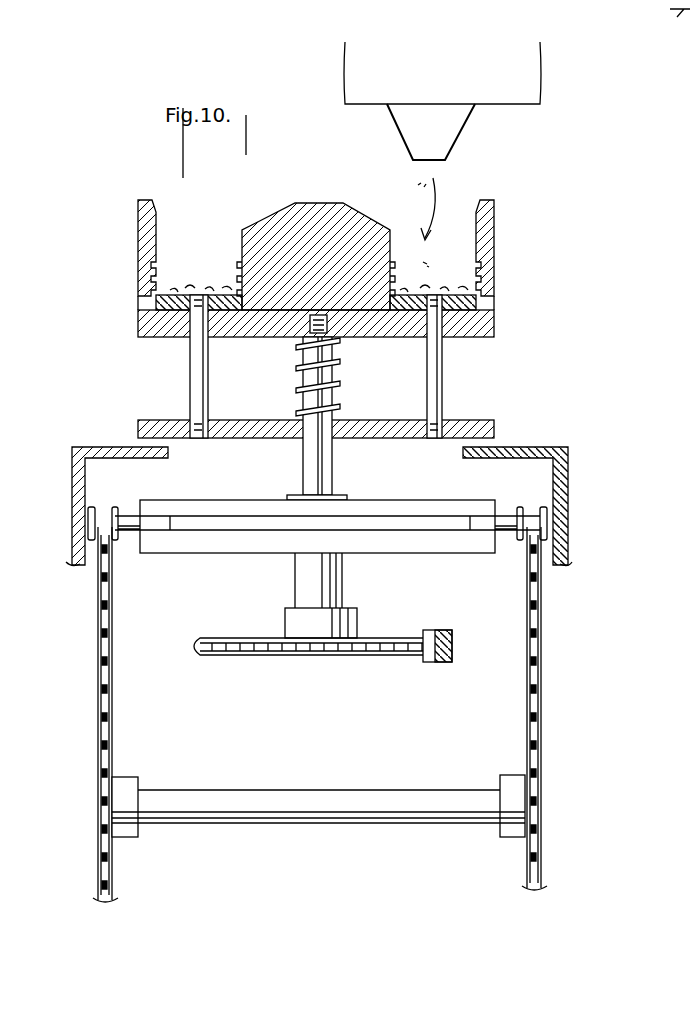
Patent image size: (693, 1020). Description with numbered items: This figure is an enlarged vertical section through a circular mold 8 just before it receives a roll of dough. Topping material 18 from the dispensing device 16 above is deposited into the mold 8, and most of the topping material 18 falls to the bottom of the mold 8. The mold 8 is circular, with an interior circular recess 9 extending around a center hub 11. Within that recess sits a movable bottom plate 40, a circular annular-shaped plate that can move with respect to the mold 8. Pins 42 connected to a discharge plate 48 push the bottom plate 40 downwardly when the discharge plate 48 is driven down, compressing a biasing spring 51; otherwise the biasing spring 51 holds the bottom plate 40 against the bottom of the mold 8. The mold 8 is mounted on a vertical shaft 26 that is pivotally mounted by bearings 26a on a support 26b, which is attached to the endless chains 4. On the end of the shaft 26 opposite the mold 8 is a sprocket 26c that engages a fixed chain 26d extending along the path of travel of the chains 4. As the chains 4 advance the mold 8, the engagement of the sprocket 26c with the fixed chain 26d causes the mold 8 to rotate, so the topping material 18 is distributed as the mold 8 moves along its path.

The dispensing device 16 is at (527, 92).
The topping material 18 is at (440, 178).
The circular mold 8 is at (493, 243).
The interior circular recess 9 is at (197, 270).
The center hub 11 is at (318, 200).
The movable bottom plate 40 is at (478, 305).
The biasing spring 51 is at (296, 370).
The vertical shaft 26 is at (317, 507).
The pins 42 is at (443, 382).
The discharge plate 48 is at (494, 419).
The bearings 26a is at (347, 497).
The support 26b is at (207, 503).
The sprocket 26c is at (370, 655).
The fixed chain 26d is at (452, 655).
The chains 4 is at (118, 540).